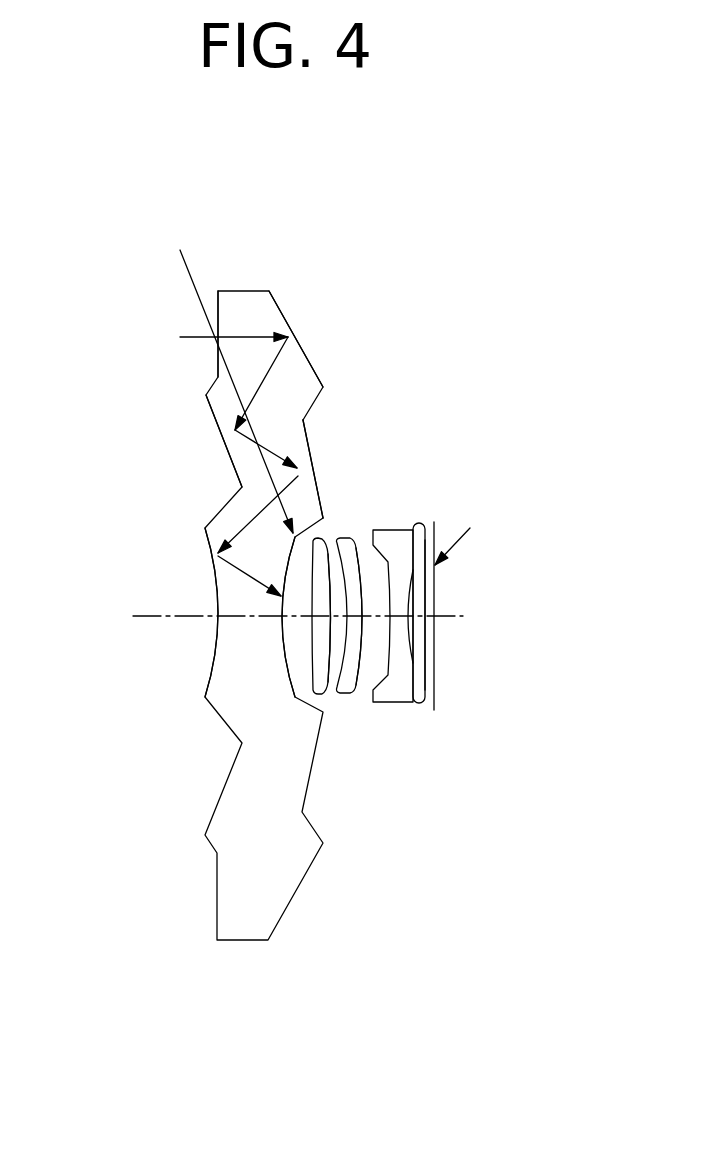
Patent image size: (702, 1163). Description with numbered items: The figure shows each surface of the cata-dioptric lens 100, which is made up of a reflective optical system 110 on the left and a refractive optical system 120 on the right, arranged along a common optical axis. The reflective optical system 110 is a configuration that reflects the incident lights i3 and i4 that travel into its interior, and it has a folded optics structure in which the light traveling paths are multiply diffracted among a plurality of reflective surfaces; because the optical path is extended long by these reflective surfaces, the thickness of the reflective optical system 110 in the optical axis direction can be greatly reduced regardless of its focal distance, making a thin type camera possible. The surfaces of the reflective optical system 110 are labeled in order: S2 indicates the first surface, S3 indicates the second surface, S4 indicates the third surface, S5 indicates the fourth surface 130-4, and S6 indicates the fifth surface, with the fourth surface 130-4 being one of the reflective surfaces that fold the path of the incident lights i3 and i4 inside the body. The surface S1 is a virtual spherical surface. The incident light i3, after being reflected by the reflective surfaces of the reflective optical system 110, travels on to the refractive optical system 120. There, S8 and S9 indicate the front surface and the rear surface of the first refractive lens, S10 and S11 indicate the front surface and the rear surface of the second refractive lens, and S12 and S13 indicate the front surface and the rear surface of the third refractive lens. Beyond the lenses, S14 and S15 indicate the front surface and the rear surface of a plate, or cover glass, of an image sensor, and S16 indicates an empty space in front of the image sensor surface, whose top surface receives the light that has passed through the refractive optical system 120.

The cata-dioptric lens 100 is at (277, 169).
The reflective optical system 110 is at (280, 283).
The refractive optical system 120 is at (382, 708).
The fourth surface 130-4 is at (320, 490).
The virtual spherical surface S1 is at (297, 617).
The first surface S2 is at (207, 335).
The second surface S3 is at (300, 339).
The third surface S4 is at (220, 441).
The fourth surface S5 is at (325, 469).
The fifth surface S6 is at (201, 612).
The front surface of the first refractive lens S8 is at (324, 616).
The rear surface of the first refractive lens S9 is at (340, 618).
The front surface of the second refractive lens S10 is at (358, 615).
The rear surface of the second refractive lens S11 is at (375, 616).
The front surface of the third refractive lens S12 is at (397, 616).
The rear surface of the third refractive lens S13 is at (413, 616).
The front surface of the plate of the image sensor S14 is at (419, 613).
The rear surface of the plate of the image sensor S15 is at (431, 615).
The empty space S16 is at (503, 606).
The incident light i3 is at (230, 463).
The incident light i4 is at (234, 379).